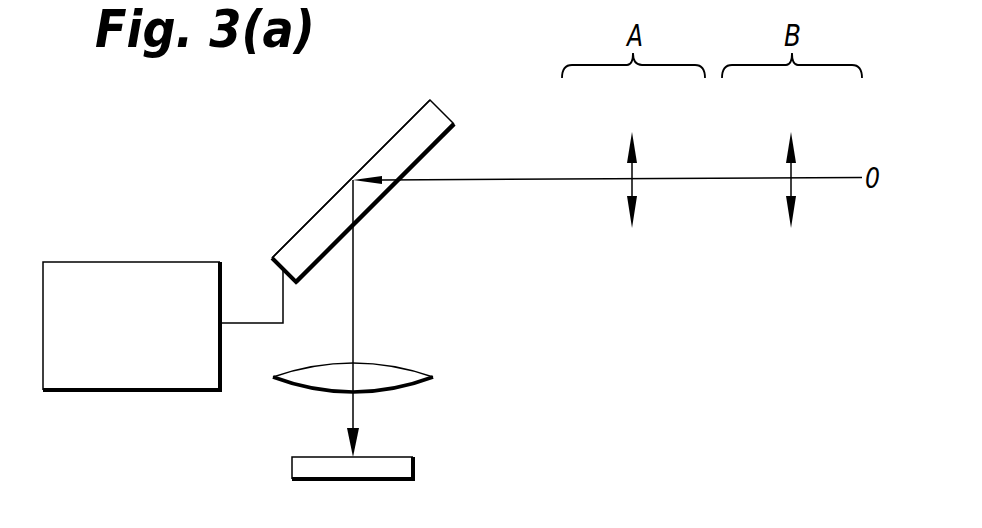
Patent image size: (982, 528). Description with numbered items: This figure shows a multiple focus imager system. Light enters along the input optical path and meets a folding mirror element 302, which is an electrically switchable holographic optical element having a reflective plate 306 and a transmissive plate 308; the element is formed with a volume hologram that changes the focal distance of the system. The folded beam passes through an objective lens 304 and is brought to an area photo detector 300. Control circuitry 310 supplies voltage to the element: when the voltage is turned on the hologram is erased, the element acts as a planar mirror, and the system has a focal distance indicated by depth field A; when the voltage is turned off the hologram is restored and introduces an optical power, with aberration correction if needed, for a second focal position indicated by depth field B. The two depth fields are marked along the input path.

The area photo detector 300 is at (413, 468).
The beam splitter 302 is at (442, 110).
The objective lens 304 is at (433, 377).
The reflective plate 306 is at (325, 207).
The transmissive plate 308 is at (378, 203).
The control circuitry 310 is at (132, 390).